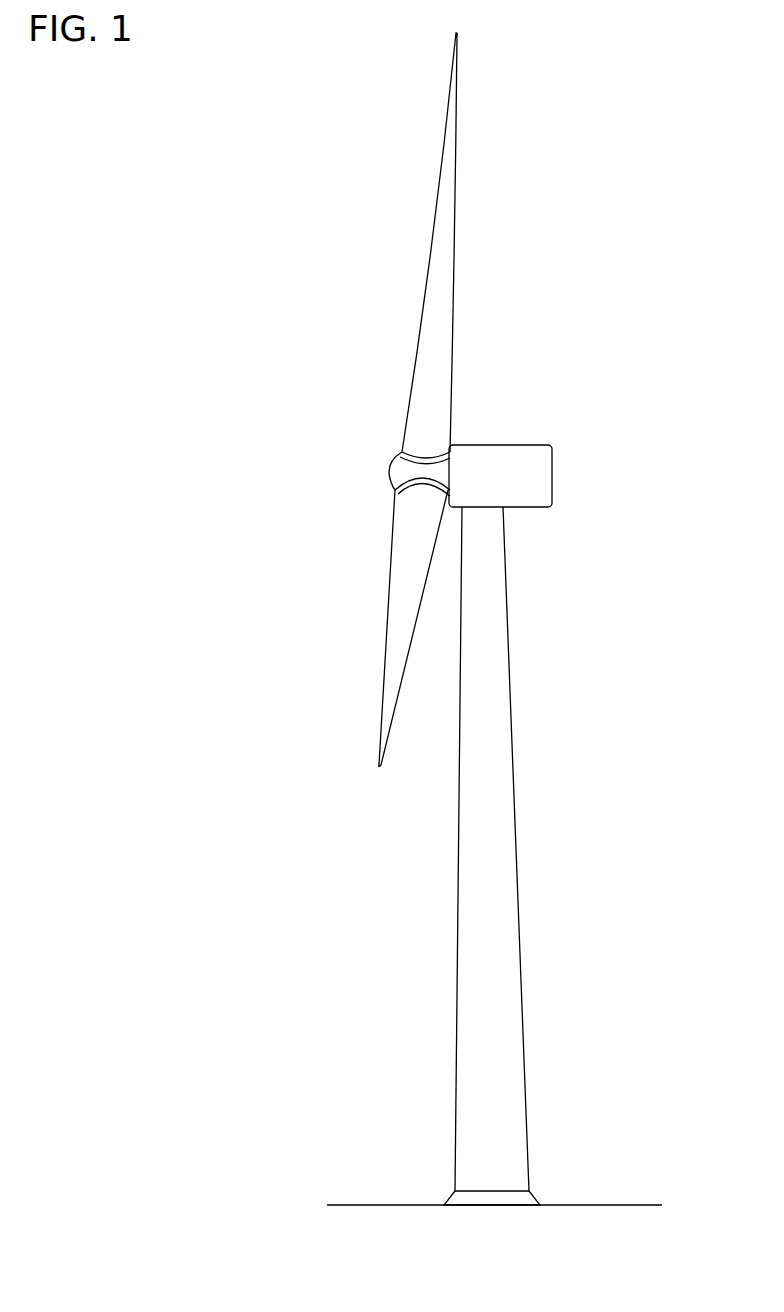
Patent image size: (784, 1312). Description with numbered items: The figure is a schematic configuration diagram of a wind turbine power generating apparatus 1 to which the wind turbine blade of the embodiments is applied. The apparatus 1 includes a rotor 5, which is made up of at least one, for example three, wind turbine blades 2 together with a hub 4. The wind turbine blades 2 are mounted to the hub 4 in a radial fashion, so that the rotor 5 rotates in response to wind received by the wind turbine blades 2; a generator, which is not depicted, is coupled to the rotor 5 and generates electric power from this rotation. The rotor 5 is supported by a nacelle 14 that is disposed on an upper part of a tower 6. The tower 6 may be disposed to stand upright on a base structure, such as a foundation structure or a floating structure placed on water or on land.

The wind turbine power generating apparatus 1 is at (618, 147).
The wind turbine blade 2 is at (435, 182).
The hub 4 is at (389, 472).
The rotor 5 is at (338, 438).
The tower 6 is at (516, 852).
The nacelle 14 is at (552, 474).